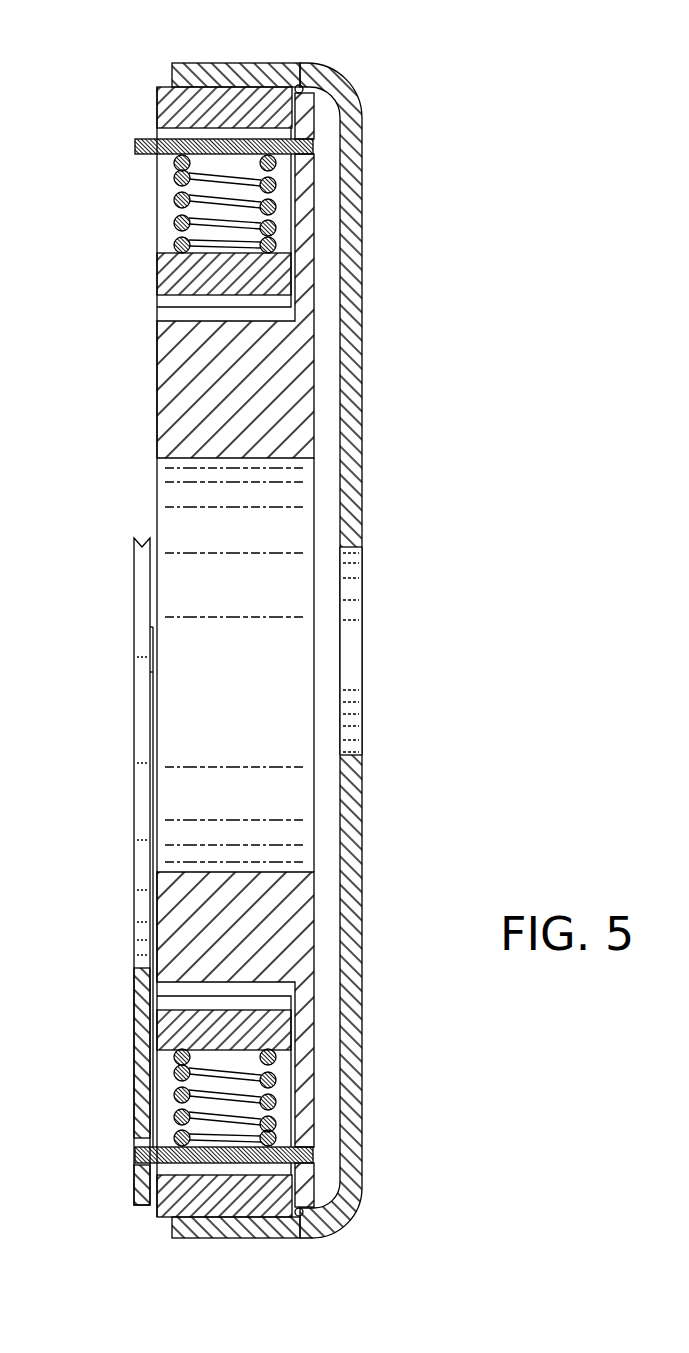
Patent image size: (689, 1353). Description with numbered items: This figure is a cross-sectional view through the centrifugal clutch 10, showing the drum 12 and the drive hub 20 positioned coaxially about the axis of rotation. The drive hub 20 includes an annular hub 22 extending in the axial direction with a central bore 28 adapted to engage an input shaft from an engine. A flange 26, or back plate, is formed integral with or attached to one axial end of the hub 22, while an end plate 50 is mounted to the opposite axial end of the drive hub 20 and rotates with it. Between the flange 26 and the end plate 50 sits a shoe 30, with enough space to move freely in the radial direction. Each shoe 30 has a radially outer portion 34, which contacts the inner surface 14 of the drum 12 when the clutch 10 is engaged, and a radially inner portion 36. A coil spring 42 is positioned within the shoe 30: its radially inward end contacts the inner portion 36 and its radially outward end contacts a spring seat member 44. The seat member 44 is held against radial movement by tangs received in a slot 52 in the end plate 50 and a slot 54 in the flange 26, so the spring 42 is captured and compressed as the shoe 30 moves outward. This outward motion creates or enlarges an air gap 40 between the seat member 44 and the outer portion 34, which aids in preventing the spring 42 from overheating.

The centrifugal clutch 10 is at (503, 88).
The drum 12 is at (336, 90).
The inner surface 14 is at (300, 85).
The drive hub 20 is at (322, 289).
The annular hub 22 is at (290, 397).
The flange 26 is at (308, 111).
The bore 28 is at (285, 585).
The shoe 30 is at (128, 294).
The radially outer portion 34 is at (215, 102).
The radially inner portion 36 is at (178, 269).
The air gap 40 is at (160, 133).
The spring 42 is at (180, 178).
The spring seat member 44 is at (137, 149).
The end plate 50 is at (90, 871).
The slot 52 is at (140, 1141).
The slot 54 is at (302, 138).